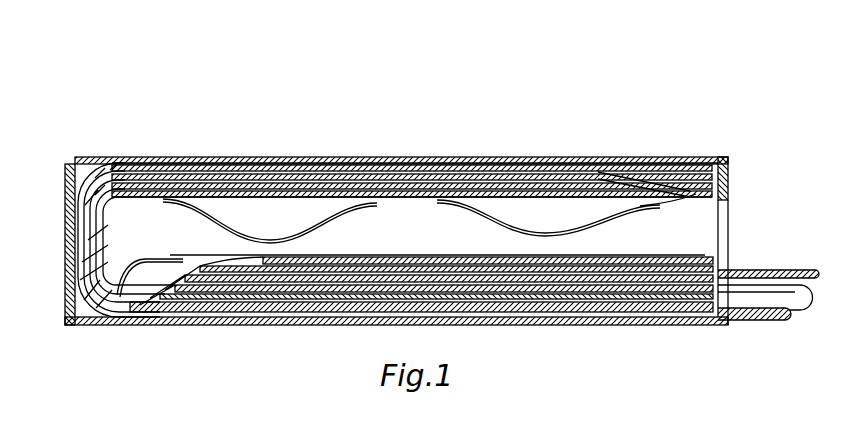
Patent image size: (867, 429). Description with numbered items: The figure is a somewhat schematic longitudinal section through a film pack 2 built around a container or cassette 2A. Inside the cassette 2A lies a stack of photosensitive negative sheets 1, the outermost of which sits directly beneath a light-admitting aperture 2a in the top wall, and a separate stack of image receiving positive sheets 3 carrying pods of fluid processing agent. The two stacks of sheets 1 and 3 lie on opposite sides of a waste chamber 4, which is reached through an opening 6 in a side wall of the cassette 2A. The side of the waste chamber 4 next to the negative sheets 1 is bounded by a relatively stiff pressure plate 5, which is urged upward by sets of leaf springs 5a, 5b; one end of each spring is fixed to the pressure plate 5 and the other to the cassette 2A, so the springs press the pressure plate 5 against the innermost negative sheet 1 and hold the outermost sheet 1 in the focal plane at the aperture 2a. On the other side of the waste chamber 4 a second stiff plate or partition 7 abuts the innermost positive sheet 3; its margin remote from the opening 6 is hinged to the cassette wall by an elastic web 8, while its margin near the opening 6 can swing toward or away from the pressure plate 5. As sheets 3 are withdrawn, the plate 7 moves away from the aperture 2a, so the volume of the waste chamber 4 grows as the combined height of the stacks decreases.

The photosensitive negative sheets 1 is at (616, 163).
The film pack 2 is at (445, 136).
The cassette 2A is at (112, 157).
The light-admitting aperture 2a is at (589, 157).
The image receiving positive sheets 3 is at (564, 313).
The waste chamber 4 is at (708, 238).
The pressure plate 5 is at (407, 199).
The leaf spring 5a is at (598, 220).
The leaf spring 5b is at (313, 221).
The opening 6 is at (727, 215).
The plate 7 is at (423, 256).
The elastic web 8 is at (154, 258).